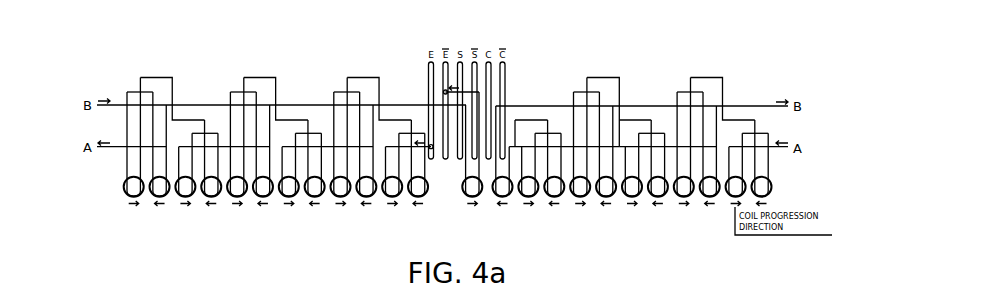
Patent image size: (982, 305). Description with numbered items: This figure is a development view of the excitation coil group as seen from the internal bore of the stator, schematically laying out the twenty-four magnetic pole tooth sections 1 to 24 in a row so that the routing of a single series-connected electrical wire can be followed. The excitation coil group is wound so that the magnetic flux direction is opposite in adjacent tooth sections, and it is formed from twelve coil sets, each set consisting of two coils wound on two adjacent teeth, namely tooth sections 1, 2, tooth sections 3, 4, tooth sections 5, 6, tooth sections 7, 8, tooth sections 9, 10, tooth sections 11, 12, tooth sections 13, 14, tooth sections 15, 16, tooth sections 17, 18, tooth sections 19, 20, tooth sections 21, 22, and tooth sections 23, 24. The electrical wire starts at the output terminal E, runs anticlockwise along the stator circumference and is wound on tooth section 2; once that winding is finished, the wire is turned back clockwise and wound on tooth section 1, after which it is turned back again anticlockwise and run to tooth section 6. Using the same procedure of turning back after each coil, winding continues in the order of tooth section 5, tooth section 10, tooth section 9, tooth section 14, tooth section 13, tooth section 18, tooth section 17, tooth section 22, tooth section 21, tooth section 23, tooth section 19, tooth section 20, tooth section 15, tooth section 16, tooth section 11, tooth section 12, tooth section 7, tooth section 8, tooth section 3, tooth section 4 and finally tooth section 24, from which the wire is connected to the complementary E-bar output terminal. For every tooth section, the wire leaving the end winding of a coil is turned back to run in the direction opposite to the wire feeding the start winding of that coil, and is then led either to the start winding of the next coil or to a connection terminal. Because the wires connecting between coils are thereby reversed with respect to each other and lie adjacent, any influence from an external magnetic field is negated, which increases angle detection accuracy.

The tooth section No. 1 is at (418, 163).
The tooth section No. 2 is at (392, 169).
The tooth section No. 3 is at (366, 149).
The tooth section No. 4 is at (341, 142).
The tooth section No. 5 is at (315, 163).
The tooth section No. 6 is at (289, 169).
The tooth section No. 7 is at (263, 149).
The tooth section No. 8 is at (237, 142).
The tooth section No. 9 is at (211, 163).
The tooth section No. 10 is at (185, 169).
The tooth section No. 11 is at (160, 149).
The tooth section No. 12 is at (134, 142).
The tooth section No. 13 is at (762, 163).
The tooth section No. 14 is at (736, 169).
The tooth section No. 15 is at (710, 149).
The tooth section No. 16 is at (684, 142).
The tooth section No. 17 is at (658, 163).
The tooth section No. 18 is at (632, 169).
The tooth section No. 19 is at (606, 149).
The tooth section No. 20 is at (580, 142).
The tooth section No. 21 is at (554, 163).
The tooth section No. 22 is at (528, 169).
The tooth section No. 23 is at (503, 156).
The tooth section No. 24 is at (472, 149).